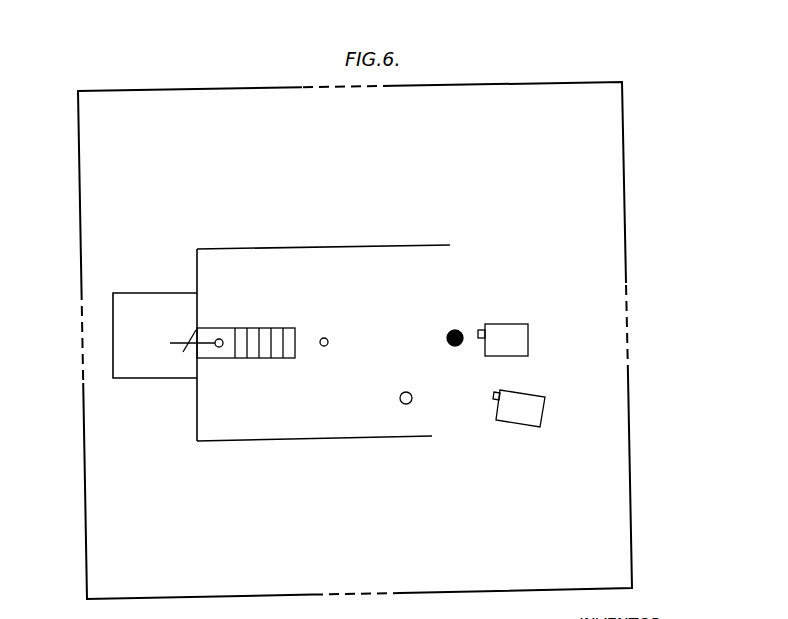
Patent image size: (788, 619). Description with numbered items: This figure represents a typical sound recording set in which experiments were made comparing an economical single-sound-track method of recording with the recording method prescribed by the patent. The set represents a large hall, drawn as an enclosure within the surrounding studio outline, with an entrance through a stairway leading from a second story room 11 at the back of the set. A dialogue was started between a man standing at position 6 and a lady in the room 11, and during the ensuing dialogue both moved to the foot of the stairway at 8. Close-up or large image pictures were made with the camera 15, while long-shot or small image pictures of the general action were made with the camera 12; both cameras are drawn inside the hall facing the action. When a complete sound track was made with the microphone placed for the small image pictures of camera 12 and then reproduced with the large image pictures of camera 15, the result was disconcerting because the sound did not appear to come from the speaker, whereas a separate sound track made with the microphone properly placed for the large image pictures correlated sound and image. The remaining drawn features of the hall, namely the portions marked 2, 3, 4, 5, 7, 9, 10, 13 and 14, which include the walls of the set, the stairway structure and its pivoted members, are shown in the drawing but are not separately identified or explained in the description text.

The housing 2 is at (305, 344).
The top wall 3 is at (322, 247).
The end wall 4 is at (197, 412).
The bottom wall 5 is at (347, 438).
The position 6 is at (412, 398).
The pivot pin 7 is at (220, 338).
The foot of the stairway 8 is at (327, 336).
The slide member 9 is at (208, 357).
The lever 10 is at (197, 354).
The second story room 11 is at (196, 330).
The camera 12 is at (497, 324).
The button 13 is at (454, 330).
The slide block 14 is at (251, 354).
The camera 15 is at (545, 407).